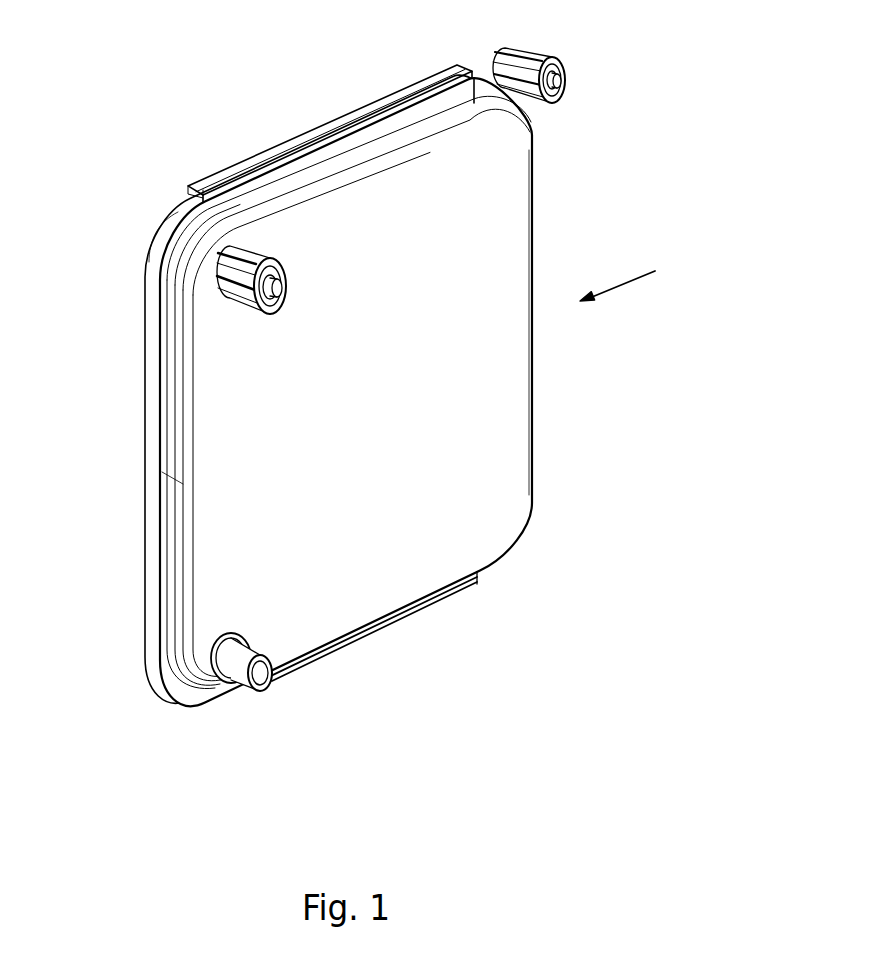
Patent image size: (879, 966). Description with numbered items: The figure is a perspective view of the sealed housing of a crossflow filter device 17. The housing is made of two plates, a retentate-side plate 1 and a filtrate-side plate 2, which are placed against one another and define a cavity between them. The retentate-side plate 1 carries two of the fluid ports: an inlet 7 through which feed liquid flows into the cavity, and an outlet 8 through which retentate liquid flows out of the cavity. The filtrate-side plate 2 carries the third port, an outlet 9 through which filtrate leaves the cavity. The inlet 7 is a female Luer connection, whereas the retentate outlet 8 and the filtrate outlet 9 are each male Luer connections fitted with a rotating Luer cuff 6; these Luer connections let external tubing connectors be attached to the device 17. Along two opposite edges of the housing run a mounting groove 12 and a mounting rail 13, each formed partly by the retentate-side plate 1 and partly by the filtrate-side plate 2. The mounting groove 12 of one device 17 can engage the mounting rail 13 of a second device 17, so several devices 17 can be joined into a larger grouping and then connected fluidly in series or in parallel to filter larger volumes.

The retentate-side plate 1 is at (493, 497).
The filtrate-side plate 2 is at (147, 322).
The rotating Luer cuff 6 is at (550, 58).
The inlet 7 is at (233, 662).
The outlet 8 is at (285, 302).
The outlet 9 is at (562, 90).
The mounting groove 12 is at (413, 100).
The mounting rail 13 is at (399, 621).
The crossflow filter device 17 is at (633, 281).